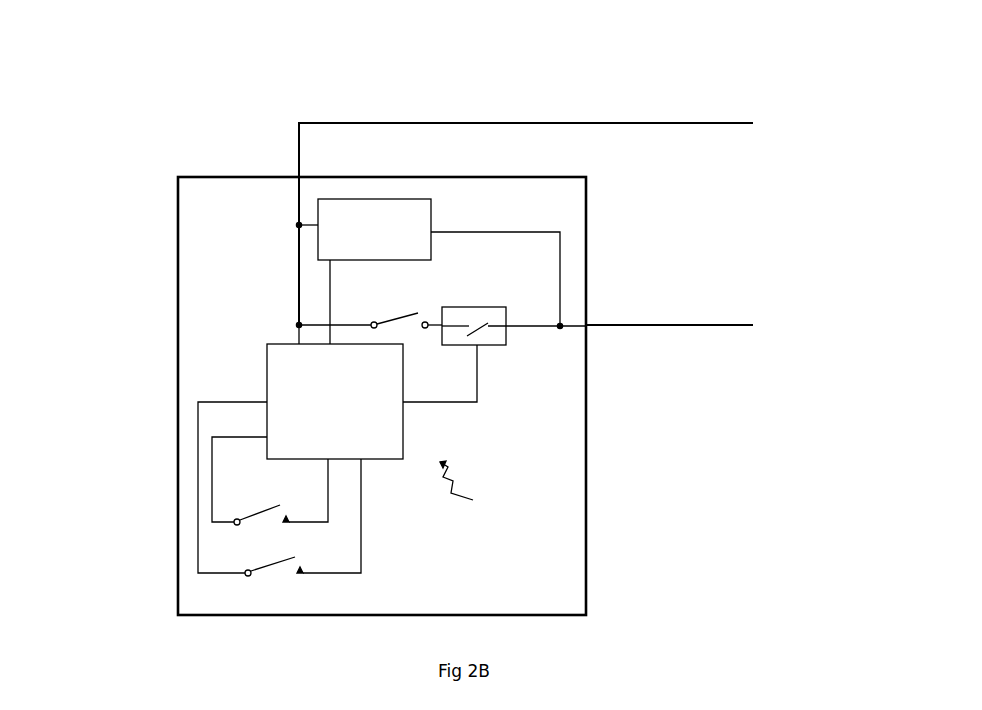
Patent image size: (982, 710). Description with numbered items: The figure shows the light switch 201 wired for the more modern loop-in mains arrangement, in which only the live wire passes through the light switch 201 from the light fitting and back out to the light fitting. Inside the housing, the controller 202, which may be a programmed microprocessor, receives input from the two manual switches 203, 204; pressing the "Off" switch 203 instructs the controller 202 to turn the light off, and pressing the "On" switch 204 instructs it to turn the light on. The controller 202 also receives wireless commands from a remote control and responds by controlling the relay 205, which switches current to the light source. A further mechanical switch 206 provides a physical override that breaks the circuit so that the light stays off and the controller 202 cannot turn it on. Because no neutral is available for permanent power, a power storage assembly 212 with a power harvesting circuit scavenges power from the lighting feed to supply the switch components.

The light switch 201 is at (218, 137).
The controller 202 is at (285, 373).
The manual switch 203 is at (267, 518).
The manual switch 204 is at (277, 575).
The relay 205 is at (495, 315).
The mechanical switch 206 is at (428, 303).
The power storage assembly 212 is at (377, 208).